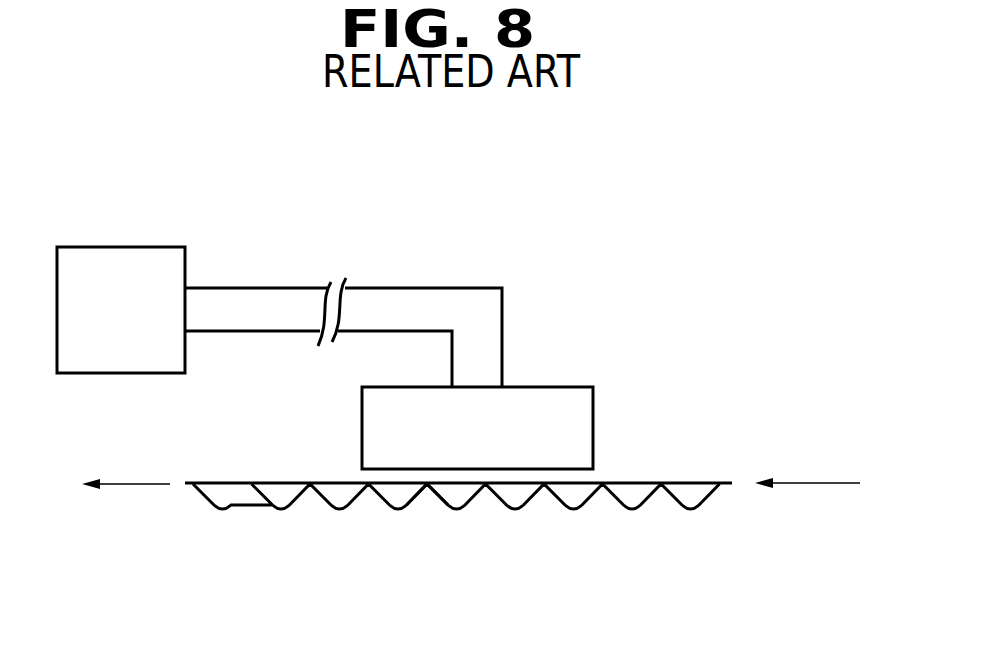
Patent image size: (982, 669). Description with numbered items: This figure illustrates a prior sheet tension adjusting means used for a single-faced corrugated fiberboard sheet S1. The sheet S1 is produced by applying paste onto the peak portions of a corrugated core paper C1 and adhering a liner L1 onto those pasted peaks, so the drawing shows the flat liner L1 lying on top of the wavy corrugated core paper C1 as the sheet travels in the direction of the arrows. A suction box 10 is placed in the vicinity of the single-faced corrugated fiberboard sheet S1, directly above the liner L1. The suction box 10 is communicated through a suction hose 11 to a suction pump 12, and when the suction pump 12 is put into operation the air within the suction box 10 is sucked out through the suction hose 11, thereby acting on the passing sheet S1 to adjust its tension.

The suction pump 12 is at (122, 247).
The suction hose 11 is at (445, 287).
The suction box 10 is at (577, 387).
The liner L1 is at (640, 482).
The single-faced corrugated fiberboard sheet S1 is at (426, 492).
The corrugated core paper C1 is at (577, 508).